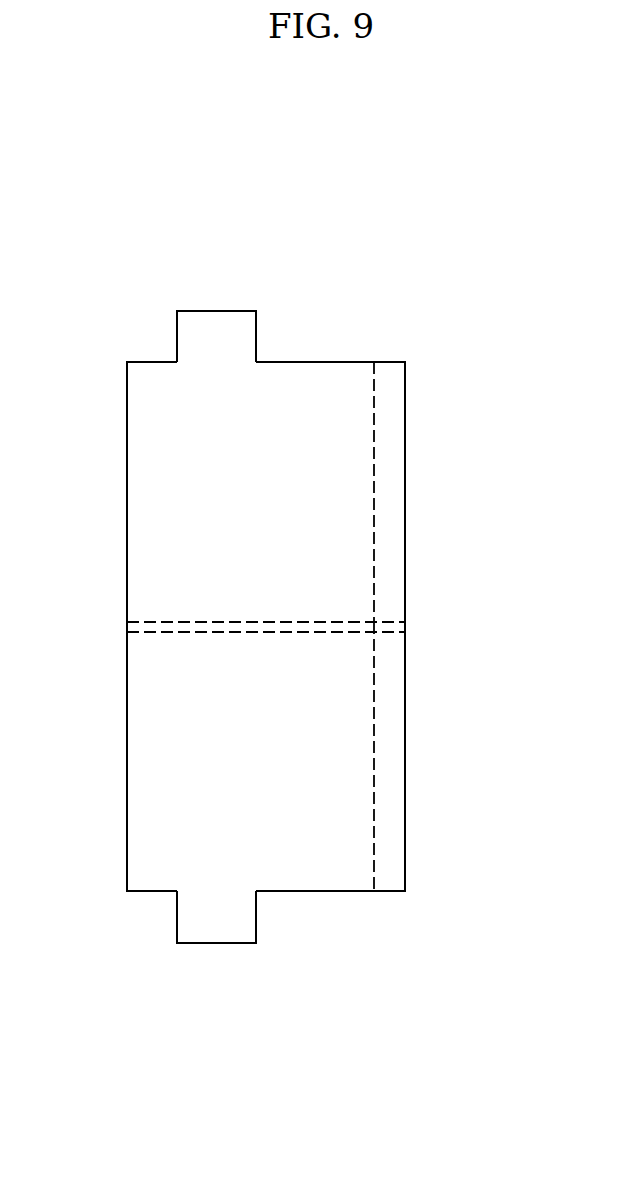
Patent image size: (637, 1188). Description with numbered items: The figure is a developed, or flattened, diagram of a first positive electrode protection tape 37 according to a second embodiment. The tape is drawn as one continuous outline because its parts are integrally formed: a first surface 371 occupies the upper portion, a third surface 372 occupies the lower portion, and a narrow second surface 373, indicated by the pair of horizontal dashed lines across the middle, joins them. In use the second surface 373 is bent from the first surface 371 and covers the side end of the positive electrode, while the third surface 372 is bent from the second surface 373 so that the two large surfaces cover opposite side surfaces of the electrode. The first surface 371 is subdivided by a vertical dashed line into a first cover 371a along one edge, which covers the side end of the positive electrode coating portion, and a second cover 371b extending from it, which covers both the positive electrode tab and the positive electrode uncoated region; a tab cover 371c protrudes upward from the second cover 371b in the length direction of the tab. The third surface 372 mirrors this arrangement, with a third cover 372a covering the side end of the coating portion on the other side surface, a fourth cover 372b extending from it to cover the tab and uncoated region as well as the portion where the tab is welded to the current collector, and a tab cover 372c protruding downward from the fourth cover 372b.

The first positive electrode protection tape 37 is at (99, 200).
The first surface 371 is at (422, 228).
The first cover 371a is at (390, 390).
The second cover 371b is at (318, 393).
The tab cover 371c is at (235, 330).
The third surface 372 is at (422, 1018).
The third cover 372a is at (392, 880).
The fourth cover 372b is at (313, 875).
The tab cover 372c is at (237, 922).
The second surface 373 is at (127, 628).